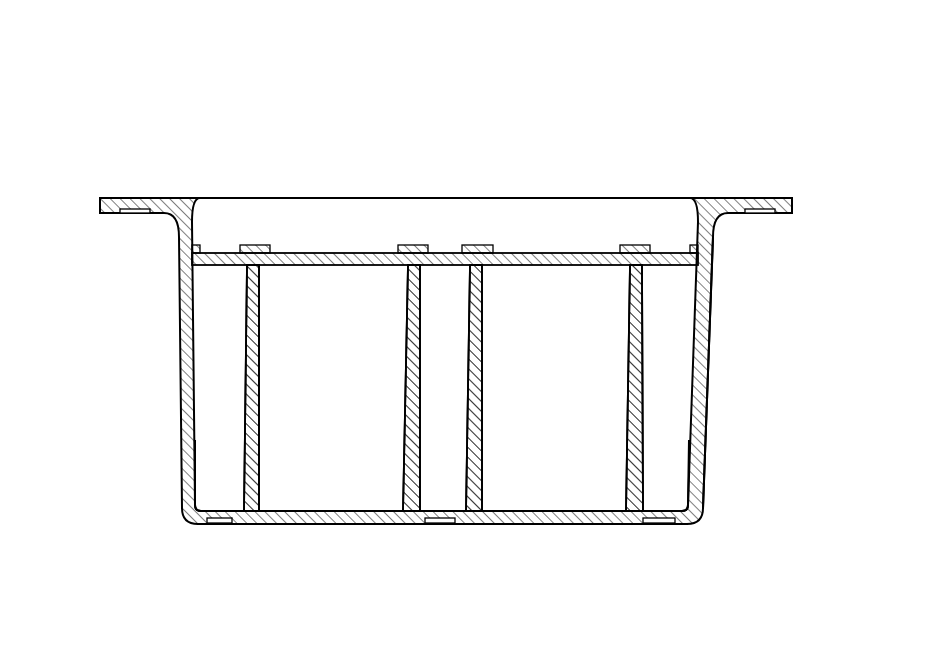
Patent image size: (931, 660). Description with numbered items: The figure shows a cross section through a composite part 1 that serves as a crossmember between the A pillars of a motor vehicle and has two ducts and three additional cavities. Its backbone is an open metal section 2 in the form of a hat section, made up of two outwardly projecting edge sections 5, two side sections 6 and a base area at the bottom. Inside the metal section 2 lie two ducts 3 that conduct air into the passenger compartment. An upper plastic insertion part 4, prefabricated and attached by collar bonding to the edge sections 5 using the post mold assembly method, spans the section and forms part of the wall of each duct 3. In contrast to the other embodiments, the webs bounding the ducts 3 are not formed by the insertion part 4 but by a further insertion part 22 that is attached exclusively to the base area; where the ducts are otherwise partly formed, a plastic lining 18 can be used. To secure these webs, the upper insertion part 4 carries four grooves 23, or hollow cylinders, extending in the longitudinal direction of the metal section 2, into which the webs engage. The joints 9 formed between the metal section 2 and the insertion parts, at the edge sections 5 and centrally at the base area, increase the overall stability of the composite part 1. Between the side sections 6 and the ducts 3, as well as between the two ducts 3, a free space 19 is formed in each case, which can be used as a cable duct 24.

The composite part 1 is at (638, 124).
The metal section 2 is at (711, 383).
The duct 3 is at (342, 358).
The insertion part 4 is at (318, 253).
The edge section 5 is at (99, 213).
The side section 6 is at (713, 313).
The joint 9 is at (152, 184).
The lining 18 is at (246, 462).
The free space 19 is at (224, 364).
The further insertion part 22 is at (688, 433).
The groove 23 is at (478, 246).
The cable duct 24 is at (459, 362).